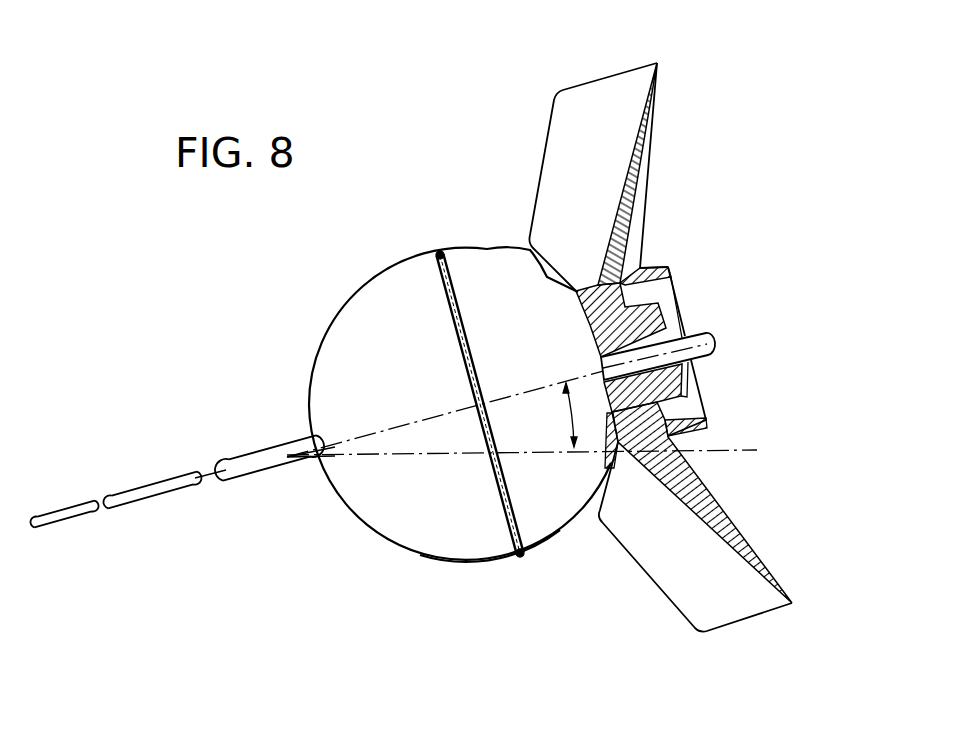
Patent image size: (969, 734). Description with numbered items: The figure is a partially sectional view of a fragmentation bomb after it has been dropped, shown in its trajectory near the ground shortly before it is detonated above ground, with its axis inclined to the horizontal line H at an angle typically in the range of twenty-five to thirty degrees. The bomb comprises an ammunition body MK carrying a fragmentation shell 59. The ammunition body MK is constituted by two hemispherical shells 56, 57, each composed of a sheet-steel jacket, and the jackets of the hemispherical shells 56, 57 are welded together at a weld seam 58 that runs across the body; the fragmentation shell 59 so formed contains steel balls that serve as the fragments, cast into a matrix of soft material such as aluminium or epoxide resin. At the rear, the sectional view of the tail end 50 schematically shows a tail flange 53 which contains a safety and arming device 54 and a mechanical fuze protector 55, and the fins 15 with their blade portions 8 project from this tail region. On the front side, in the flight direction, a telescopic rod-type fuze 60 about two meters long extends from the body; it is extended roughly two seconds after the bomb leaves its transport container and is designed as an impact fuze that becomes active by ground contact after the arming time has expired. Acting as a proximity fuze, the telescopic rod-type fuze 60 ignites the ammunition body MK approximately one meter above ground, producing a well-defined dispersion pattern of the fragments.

The wind turbine blade 8 is at (643, 130).
The blade 15 is at (595, 102).
The tail end 50 is at (647, 413).
The tail flange 53 is at (665, 268).
The safety and arming device 54 is at (642, 320).
The mechanical fuze protector 55 is at (705, 334).
The hemispherical shell 56 is at (412, 528).
The hemispherical shell 57 is at (547, 503).
The weld seam 58 is at (451, 290).
The fragmentation shell 59 is at (310, 388).
The telescopic rod-type fuze 60 is at (191, 547).
The ammunition body MK is at (320, 309).
The horizontal reference line H is at (743, 450).